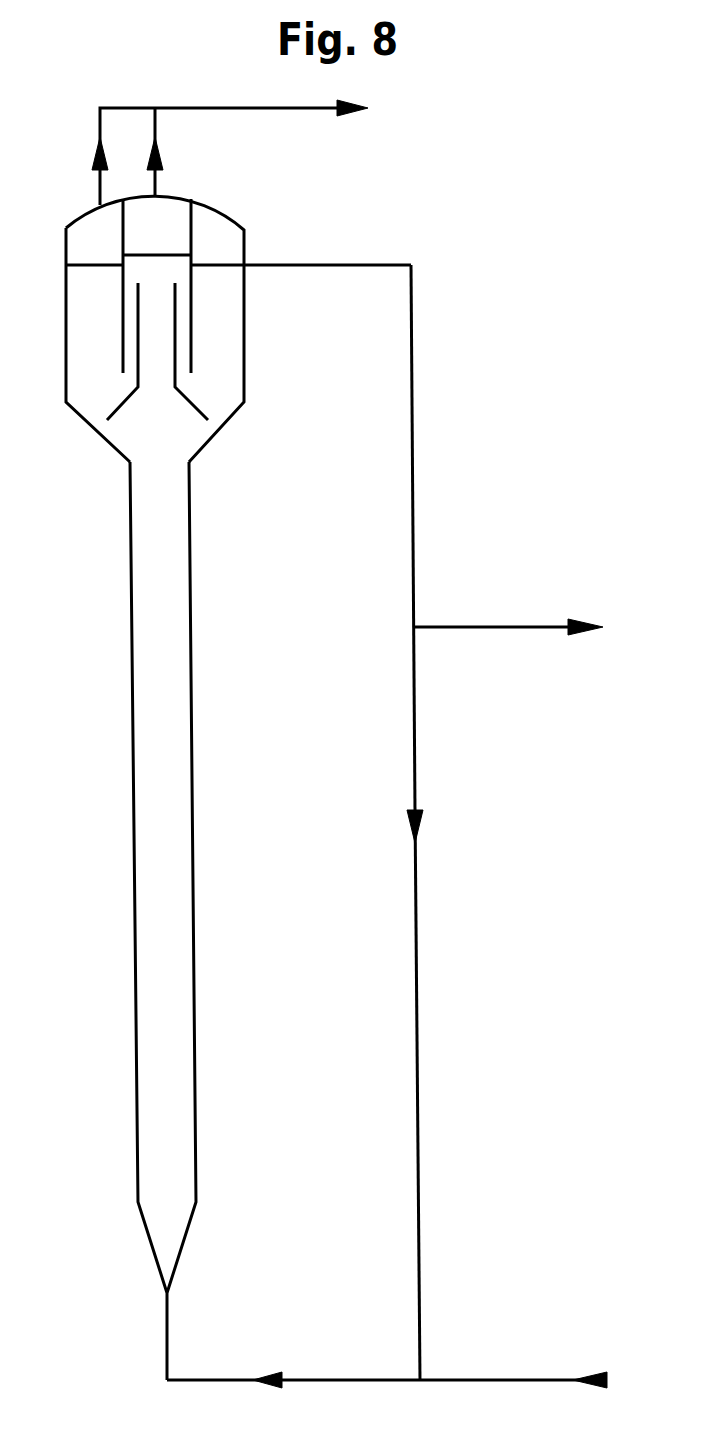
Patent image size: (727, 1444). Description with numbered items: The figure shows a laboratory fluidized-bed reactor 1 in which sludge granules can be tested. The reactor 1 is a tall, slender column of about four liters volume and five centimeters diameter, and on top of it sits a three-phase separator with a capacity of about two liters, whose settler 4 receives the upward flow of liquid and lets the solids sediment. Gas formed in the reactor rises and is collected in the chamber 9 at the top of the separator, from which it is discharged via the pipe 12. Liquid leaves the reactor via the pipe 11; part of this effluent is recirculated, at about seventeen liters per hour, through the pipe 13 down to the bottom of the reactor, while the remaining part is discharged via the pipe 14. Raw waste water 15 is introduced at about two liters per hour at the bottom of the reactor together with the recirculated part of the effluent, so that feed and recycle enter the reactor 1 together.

The fluidized-bed reactor 1 is at (136, 782).
The settler 4 is at (238, 329).
The chamber 9 is at (157, 286).
The pipe 11 is at (413, 447).
The pipe 12 is at (228, 108).
The pipe 13 is at (418, 993).
The pipe 14 is at (498, 627).
The raw waste water 15 is at (473, 1380).